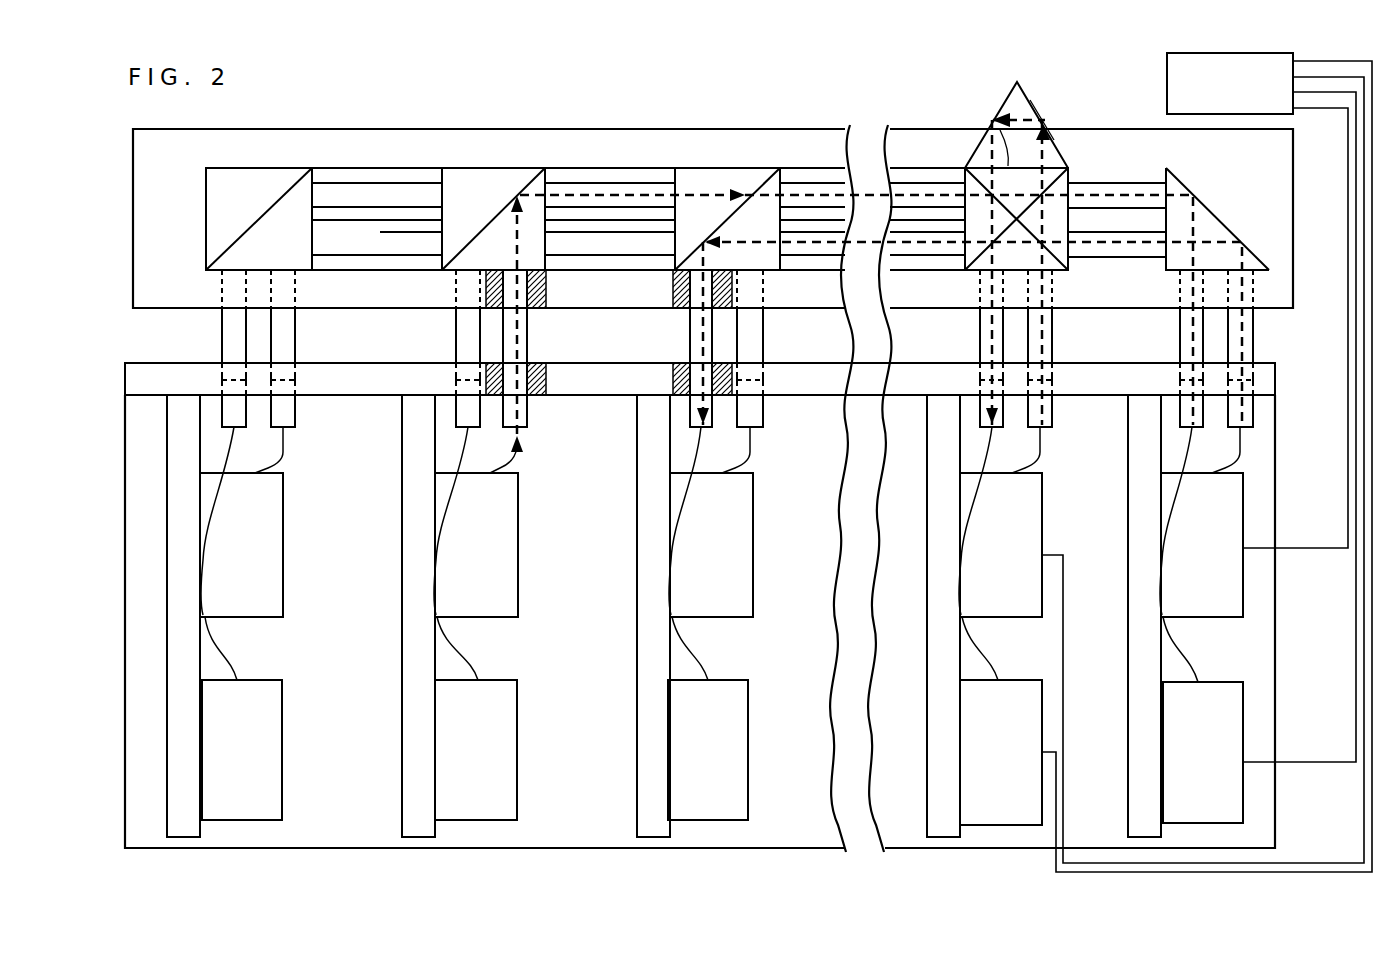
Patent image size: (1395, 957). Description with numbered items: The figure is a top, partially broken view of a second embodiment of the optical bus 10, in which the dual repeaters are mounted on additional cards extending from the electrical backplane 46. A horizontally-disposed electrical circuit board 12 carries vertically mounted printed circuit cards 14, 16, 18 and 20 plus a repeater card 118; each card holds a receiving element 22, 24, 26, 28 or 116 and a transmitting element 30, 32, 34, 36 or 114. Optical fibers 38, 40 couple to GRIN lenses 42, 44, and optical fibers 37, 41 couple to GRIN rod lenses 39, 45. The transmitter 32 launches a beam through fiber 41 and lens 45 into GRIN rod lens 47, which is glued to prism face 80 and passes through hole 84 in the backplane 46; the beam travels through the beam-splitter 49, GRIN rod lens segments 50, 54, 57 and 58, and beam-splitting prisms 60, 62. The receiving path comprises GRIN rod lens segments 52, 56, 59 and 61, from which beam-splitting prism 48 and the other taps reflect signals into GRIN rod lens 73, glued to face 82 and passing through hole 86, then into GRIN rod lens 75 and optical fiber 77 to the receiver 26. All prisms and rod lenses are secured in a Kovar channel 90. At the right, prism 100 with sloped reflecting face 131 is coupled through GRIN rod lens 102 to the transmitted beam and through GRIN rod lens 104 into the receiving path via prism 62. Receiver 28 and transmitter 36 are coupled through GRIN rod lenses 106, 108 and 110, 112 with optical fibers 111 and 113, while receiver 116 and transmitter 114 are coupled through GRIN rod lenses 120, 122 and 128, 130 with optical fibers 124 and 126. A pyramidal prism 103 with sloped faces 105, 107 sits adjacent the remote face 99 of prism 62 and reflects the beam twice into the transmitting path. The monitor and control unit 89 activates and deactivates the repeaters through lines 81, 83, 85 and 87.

The optical bus 10 is at (612, 106).
The electrical circuit board 12 is at (322, 804).
The printed circuit card 14 is at (173, 675).
The printed circuit card 16 is at (417, 658).
The printed circuit card 18 is at (648, 657).
The printed circuit card 20 is at (932, 610).
The receiving element 22 is at (227, 749).
The receiving element 24 is at (463, 756).
The receiving element 26 is at (703, 767).
The receiving element 28 is at (985, 759).
The transmitting element 30 is at (235, 572).
The transmitting element 32 is at (470, 567).
The transmitting element 34 is at (705, 564).
The transmitting element 36 is at (997, 562).
The optical fiber 37 is at (462, 652).
The optical fiber 38 is at (228, 652).
The GRIN rod lens 39 is at (455, 416).
The optical fiber 40 is at (280, 462).
The optical fiber 41 is at (515, 475).
The GRIN rod lens 42 is at (220, 405).
The GRIN rod lens 44 is at (297, 418).
The GRIN rod lens 45 is at (503, 355).
The electrical backplane 46 is at (700, 362).
The GRIN rod lens 47 is at (503, 348).
The beam-splitting prism 48 is at (272, 175).
The beam-splitter 49 is at (468, 178).
The GRIN rod lens segment 50 is at (377, 217).
The GRIN rod lens segment 52 is at (366, 247).
The GRIN rod lens segment 54 is at (622, 200).
The GRIN rod lens segment 56 is at (618, 246).
The GRIN rod lens segment 57 is at (831, 220).
The GRIN rod lens segment 58 is at (921, 215).
The GRIN rod lens segment 59 is at (818, 253).
The beam-splitting prism 60 is at (730, 180).
The GRIN rod lens segment 61 is at (928, 252).
The beam-splitting prism 62 is at (1050, 142).
The GRIN rod lens 73 is at (678, 348).
The GRIN rod lens 75 is at (667, 361).
The optical fiber 77 is at (692, 457).
The prism face 80 is at (447, 270).
The line 81 is at (1077, 598).
The prism face 82 is at (773, 274).
The line 83 is at (1057, 813).
The hole 84 is at (488, 363).
The line 85 is at (1334, 549).
The hole 86 is at (678, 366).
The line 87 is at (1323, 760).
The monitor and control unit 89 is at (1210, 89).
The channel 90 is at (197, 153).
The remote face 99 is at (1000, 130).
The prism 100 is at (1225, 208).
The GRIN rod lens 102 is at (1117, 219).
The pyramidal-shaped prism 103 is at (1010, 118).
The GRIN rod lens 104 is at (1128, 252).
The sloped reflecting face 105 is at (1015, 107).
The GRIN rod lens 106 is at (1053, 346).
The sloped reflecting face 107 is at (1030, 98).
The GRIN rod lens 108 is at (1075, 372).
The GRIN rod lens 110 is at (955, 348).
The optical fiber 111 is at (988, 650).
The GRIN rod lens 112 is at (982, 410).
The optical fiber 113 is at (1048, 479).
The transmitter 114 is at (1188, 544).
The receiver 116 is at (1181, 769).
The card 118 is at (1140, 562).
The GRIN rod lens 120 is at (1180, 330).
The GRIN rod lens 122 is at (1139, 351).
The optical fiber 124 is at (1195, 660).
The optical fiber 126 is at (1243, 455).
The GRIN rod lens 128 is at (1282, 348).
The GRIN rod lens 130 is at (1255, 336).
The sloped reflecting face 131 is at (1232, 240).